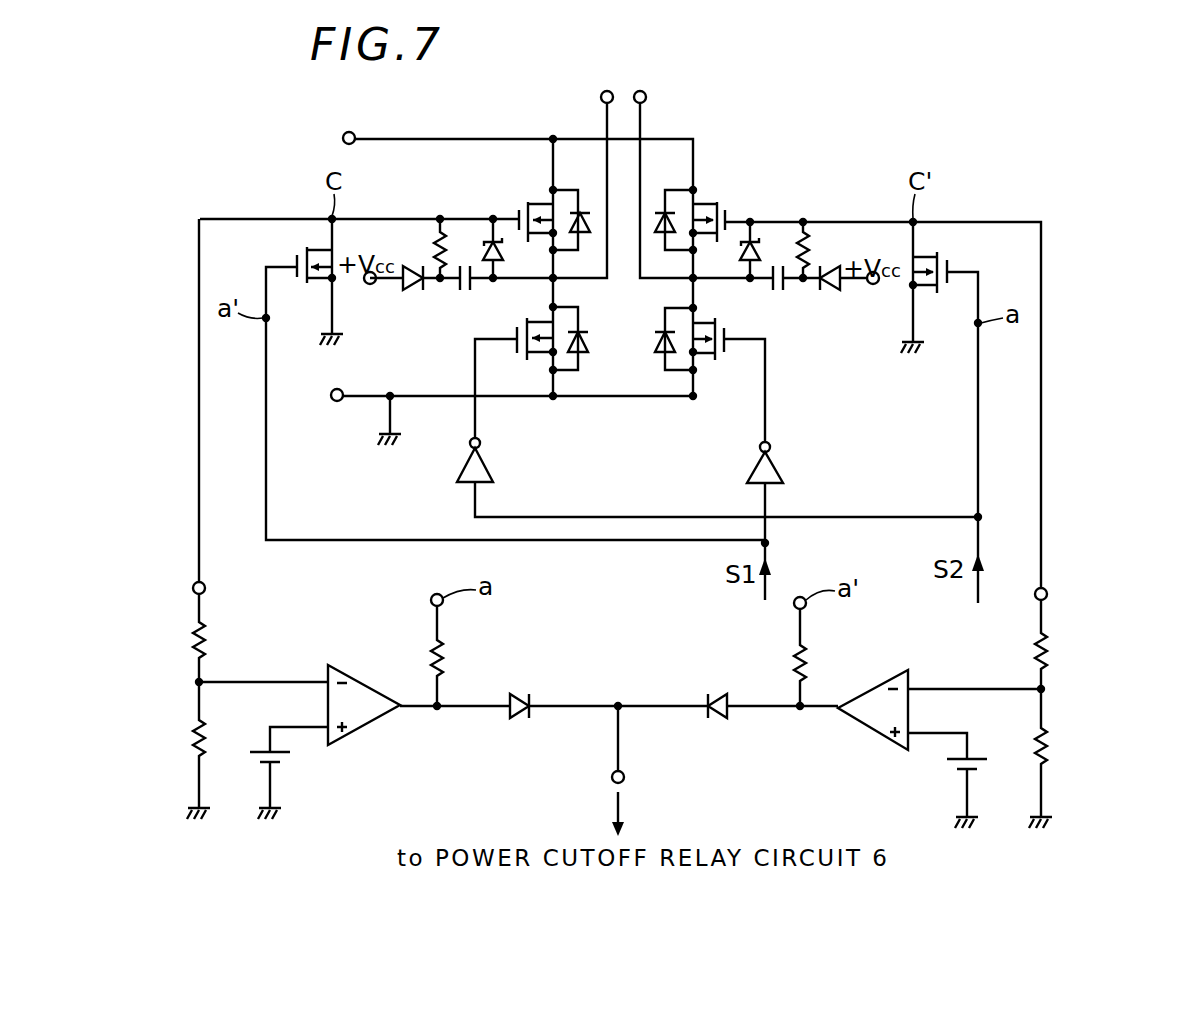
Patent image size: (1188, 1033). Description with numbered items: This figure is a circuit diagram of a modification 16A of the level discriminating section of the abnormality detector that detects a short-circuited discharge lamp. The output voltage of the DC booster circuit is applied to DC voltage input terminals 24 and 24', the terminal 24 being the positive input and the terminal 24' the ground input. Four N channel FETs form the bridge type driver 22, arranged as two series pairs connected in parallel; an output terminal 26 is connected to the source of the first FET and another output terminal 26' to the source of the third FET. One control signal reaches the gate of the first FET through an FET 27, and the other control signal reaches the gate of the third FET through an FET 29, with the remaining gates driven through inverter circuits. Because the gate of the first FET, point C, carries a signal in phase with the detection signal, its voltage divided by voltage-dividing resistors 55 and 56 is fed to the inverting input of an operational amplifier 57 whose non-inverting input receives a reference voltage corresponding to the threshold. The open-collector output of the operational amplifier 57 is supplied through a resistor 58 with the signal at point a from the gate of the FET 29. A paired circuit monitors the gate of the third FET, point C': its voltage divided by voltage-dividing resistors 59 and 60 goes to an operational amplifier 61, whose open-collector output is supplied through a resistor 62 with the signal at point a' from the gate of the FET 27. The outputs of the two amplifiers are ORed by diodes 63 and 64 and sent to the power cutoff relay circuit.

The modification of the level discriminating section 16A is at (822, 140).
The bridge type driver 22 is at (532, 118).
The DC voltage input terminal 24 is at (481, 152).
The DC voltage input terminal 24' is at (487, 419).
The output terminal 26 is at (551, 165).
The output terminal 26' is at (756, 170).
The FET 27 is at (280, 250).
The FET 29 is at (962, 256).
The voltage-dividing resistor 55 is at (196, 636).
The voltage-dividing resistor 56 is at (196, 732).
The operational amplifier 57 is at (366, 682).
The resistor 58 is at (443, 650).
The voltage-dividing resistor 59 is at (1046, 640).
The voltage-dividing resistor 60 is at (1046, 740).
The operational amplifier 61 is at (879, 736).
The resistor 62 is at (879, 684).
The diode 63 is at (515, 720).
The diode 64 is at (714, 720).